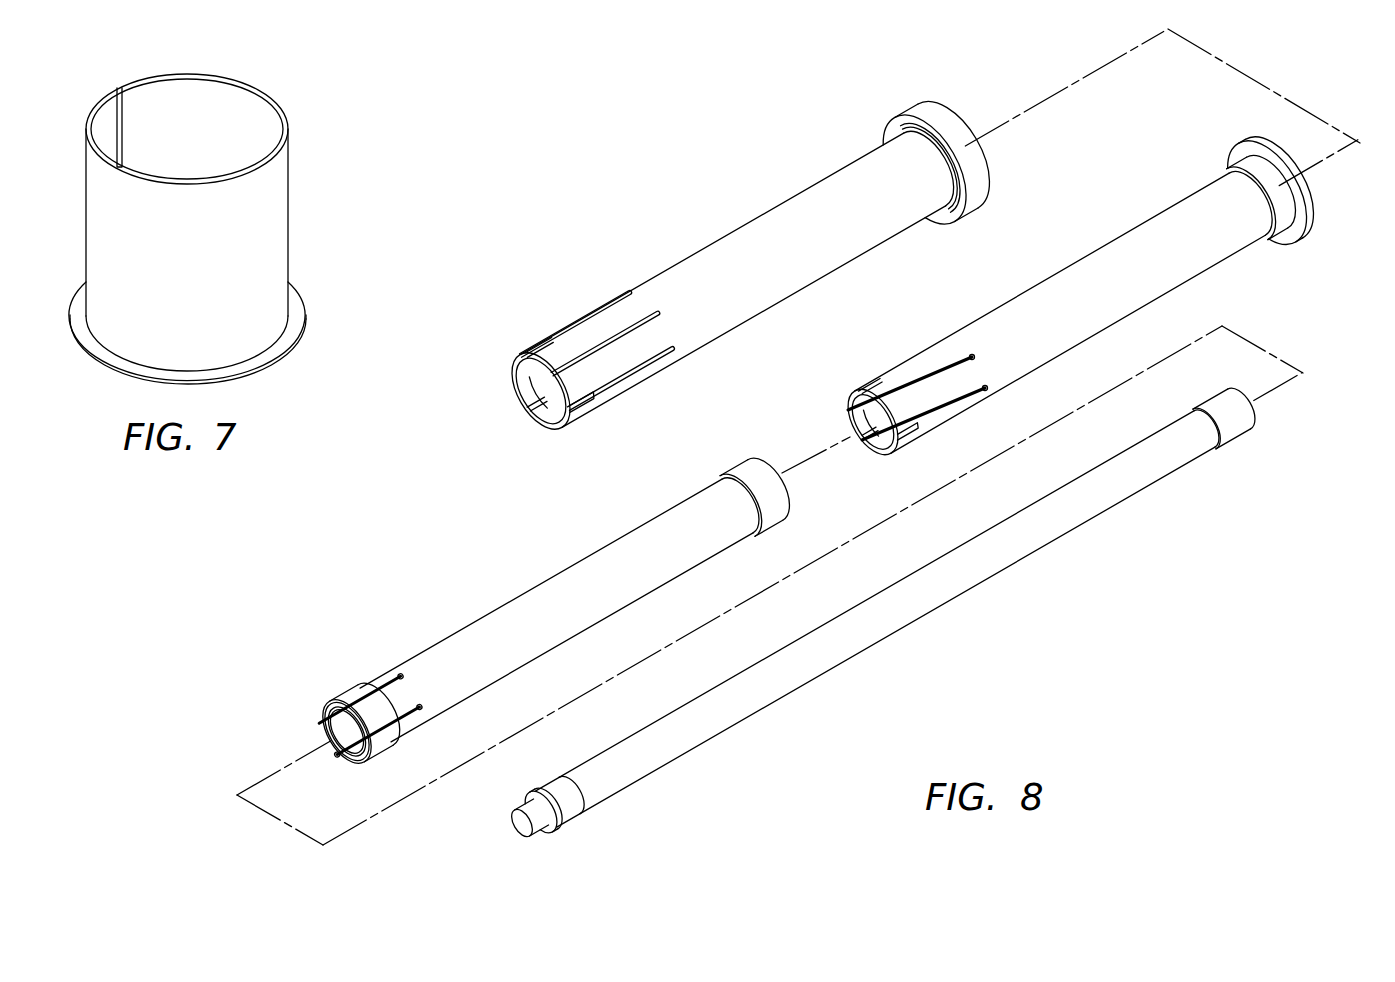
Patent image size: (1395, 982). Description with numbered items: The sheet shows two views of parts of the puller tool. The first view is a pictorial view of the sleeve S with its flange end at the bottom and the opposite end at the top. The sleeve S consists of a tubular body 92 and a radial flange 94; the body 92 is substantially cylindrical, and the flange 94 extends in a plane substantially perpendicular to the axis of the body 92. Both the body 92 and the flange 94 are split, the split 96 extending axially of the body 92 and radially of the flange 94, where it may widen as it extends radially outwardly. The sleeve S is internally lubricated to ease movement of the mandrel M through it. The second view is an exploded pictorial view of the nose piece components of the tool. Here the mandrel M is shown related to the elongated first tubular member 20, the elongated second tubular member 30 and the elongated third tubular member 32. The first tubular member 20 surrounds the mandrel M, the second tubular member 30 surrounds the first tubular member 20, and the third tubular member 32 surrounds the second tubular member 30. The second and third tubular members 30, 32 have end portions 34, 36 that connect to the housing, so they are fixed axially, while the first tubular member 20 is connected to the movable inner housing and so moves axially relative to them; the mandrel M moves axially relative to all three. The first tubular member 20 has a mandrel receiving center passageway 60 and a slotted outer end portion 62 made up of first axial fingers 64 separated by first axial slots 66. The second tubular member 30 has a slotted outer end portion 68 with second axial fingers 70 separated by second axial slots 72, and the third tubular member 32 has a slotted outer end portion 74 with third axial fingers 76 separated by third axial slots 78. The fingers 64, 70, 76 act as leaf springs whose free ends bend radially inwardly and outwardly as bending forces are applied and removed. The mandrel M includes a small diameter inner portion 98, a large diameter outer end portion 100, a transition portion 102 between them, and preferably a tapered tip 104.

In FIG. 7, the sleeve S is at (208, 210).
In FIG. 7, the tubular body 92 is at (256, 244).
In FIG. 7, the radial flange 94 is at (288, 340).
In FIG. 7, the split 96 is at (123, 108).
In FIG. 8, the first tubular member 20 is at (546, 590).
In FIG. 8, the second tubular member 30 is at (1031, 300).
In FIG. 8, the third tubular member 32 is at (737, 226).
In FIG. 8, the end portion 34 is at (1299, 205).
In FIG. 8, the end portion 36 is at (946, 120).
In FIG. 8, the mandrel receiving center passageway 60 is at (322, 734).
In FIG. 8, the slotted outer end portion 62 is at (362, 650).
In FIG. 8, the first axial fingers 64 is at (373, 692).
In FIG. 8, the first axial slots 66 is at (404, 699).
In FIG. 8, the slotted outer end portion 68 is at (890, 352).
In FIG. 8, the second axial fingers 70 is at (872, 393).
In FIG. 8, the second axial slots 72 is at (920, 350).
In FIG. 8, the slotted outer end portion 74 is at (499, 290).
In FIG. 8, the third axial fingers 76 is at (577, 340).
In FIG. 8, the third axial slots 78 is at (595, 303).
In FIG. 8, the mandrel M is at (868, 634).
In FIG. 8, the small diameter inner portion 98 is at (826, 663).
In FIG. 8, the large diameter outer end portion 100 is at (545, 797).
In FIG. 8, the transition portion 102 is at (557, 788).
In FIG. 8, the tapered tip 104 is at (540, 832).